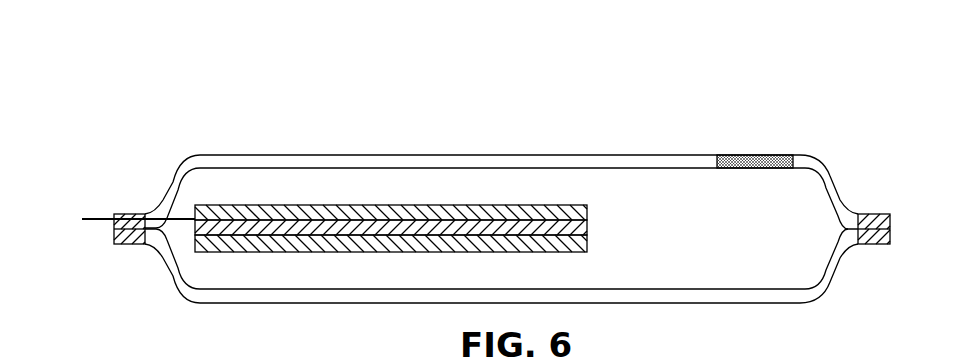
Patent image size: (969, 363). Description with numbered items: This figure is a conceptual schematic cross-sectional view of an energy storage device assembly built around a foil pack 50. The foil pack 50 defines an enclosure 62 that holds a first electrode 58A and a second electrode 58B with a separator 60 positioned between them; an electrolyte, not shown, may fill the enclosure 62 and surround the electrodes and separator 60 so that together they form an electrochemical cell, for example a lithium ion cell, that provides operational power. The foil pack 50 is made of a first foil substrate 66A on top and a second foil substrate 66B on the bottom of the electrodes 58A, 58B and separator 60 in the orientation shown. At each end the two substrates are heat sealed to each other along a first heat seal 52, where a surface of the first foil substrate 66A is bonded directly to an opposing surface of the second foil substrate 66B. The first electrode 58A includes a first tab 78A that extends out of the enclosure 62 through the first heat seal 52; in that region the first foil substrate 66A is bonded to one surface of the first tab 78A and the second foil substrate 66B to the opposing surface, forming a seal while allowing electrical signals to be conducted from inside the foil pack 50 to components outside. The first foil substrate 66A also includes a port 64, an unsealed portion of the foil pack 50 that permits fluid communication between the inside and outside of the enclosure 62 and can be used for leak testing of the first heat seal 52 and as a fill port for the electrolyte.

The foil pack 50 is at (215, 140).
The first heat seal 52 is at (135, 213).
The first electrode 58A is at (473, 215).
The second electrode 58B is at (412, 242).
The separator 60 is at (587, 228).
The enclosure 62 is at (230, 188).
The port 64 is at (737, 160).
The first foil substrate 66A is at (422, 160).
The second foil substrate 66B is at (621, 296).
The first tab 78A is at (82, 218).